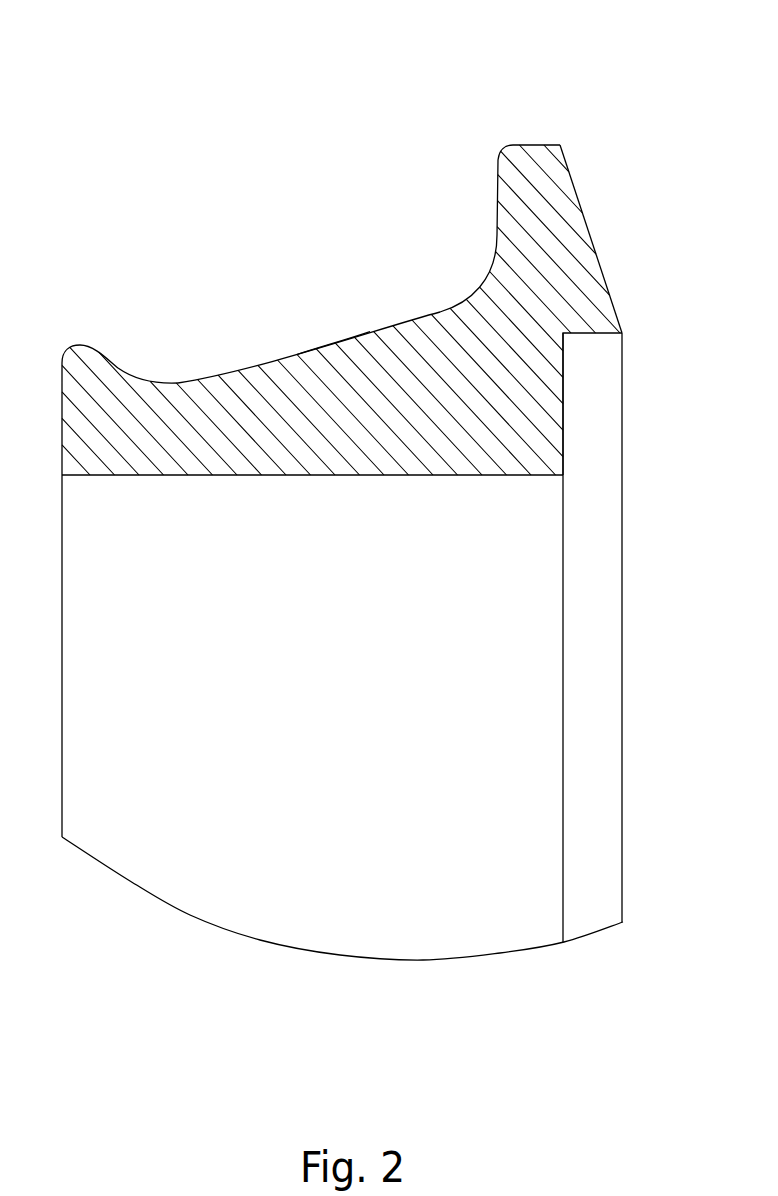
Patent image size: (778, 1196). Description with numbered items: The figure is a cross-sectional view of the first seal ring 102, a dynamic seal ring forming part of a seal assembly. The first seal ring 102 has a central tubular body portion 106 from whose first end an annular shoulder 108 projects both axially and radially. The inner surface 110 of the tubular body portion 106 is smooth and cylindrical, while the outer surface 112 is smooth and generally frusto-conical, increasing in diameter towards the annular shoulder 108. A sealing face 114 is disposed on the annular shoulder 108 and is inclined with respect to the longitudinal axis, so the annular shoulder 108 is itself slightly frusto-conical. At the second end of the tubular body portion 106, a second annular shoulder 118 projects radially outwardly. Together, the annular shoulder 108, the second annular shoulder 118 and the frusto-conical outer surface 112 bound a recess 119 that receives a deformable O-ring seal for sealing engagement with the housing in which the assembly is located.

The first seal ring 102 is at (150, 101).
The central tubular body portion 106 is at (343, 432).
The annular shoulder 108 is at (545, 233).
The inner surface 110 is at (308, 473).
The outer surface 112 is at (348, 340).
The sealing face 114 is at (590, 235).
The second annular shoulder 118 is at (87, 362).
The recess 119 is at (300, 335).